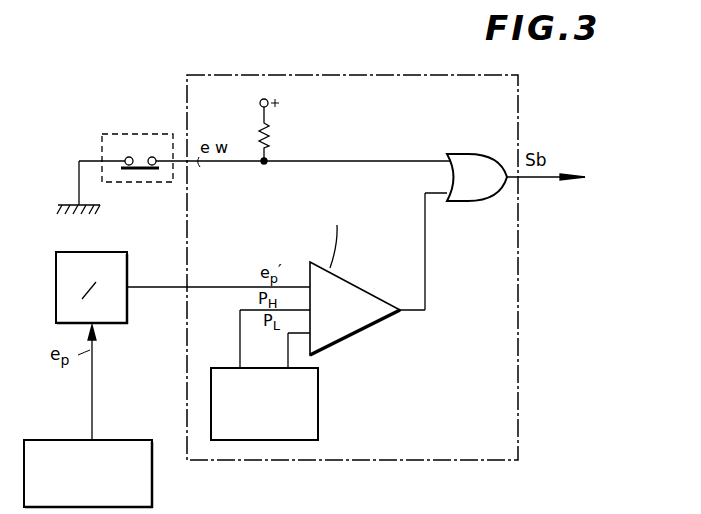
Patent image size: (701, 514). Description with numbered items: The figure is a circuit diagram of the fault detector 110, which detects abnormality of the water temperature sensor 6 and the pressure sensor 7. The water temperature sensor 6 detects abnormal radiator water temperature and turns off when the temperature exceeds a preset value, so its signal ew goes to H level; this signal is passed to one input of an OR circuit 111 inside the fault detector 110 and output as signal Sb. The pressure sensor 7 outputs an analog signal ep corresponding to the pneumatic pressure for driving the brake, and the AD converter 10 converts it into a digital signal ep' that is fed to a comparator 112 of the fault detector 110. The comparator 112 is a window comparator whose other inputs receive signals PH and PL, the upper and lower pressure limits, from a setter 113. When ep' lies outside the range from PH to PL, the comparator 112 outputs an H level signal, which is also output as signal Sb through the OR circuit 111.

The water temperature sensor 6 is at (148, 133).
The pressure sensor 7 is at (114, 440).
The AD converter 10 is at (104, 252).
The fault detector 110 is at (417, 75).
The OR circuit 111 is at (463, 154).
The comparator 112 is at (356, 281).
The setter 113 is at (320, 410).